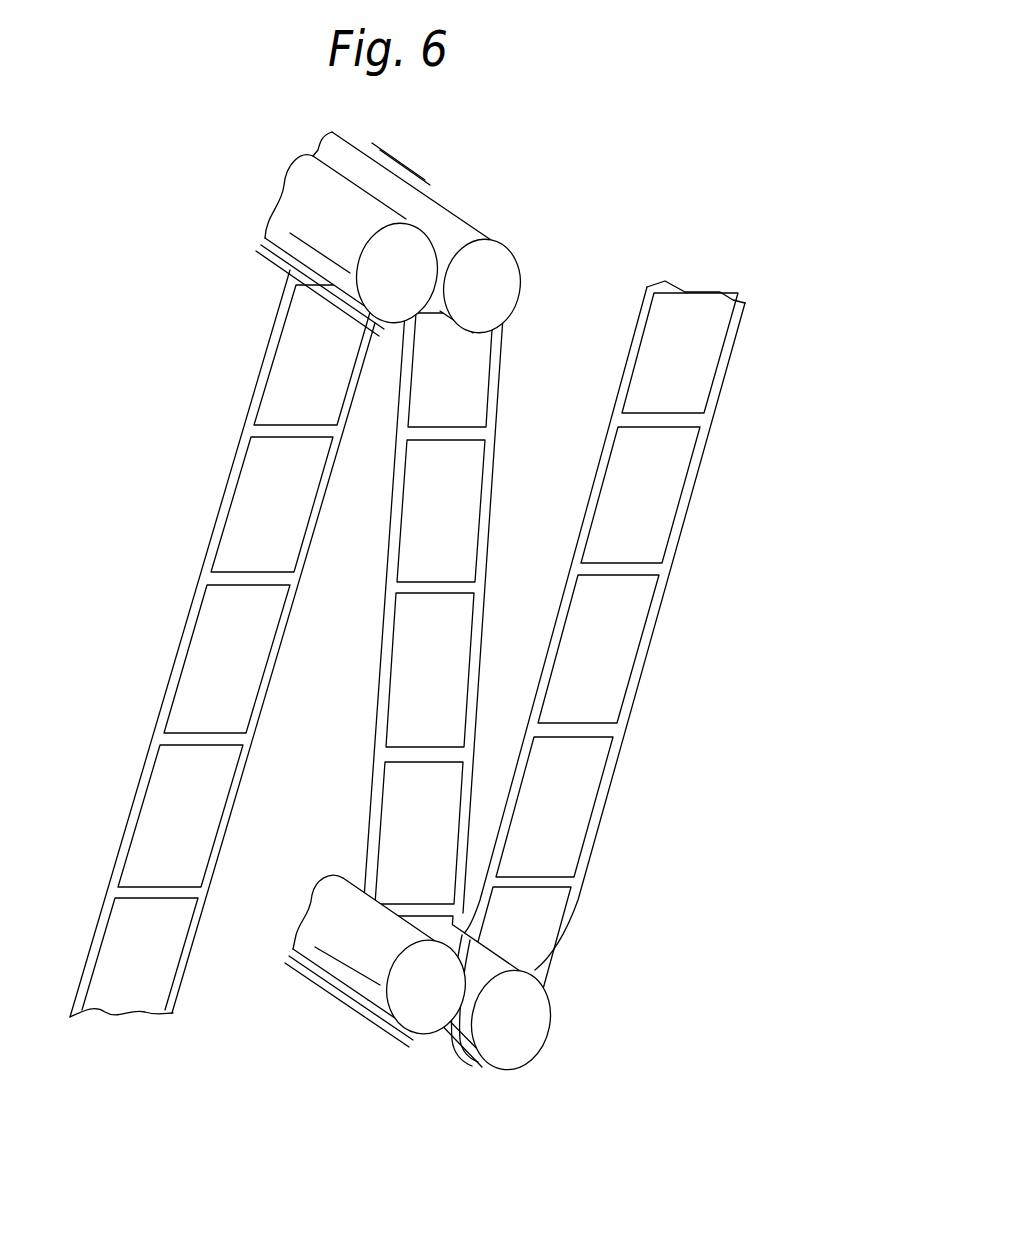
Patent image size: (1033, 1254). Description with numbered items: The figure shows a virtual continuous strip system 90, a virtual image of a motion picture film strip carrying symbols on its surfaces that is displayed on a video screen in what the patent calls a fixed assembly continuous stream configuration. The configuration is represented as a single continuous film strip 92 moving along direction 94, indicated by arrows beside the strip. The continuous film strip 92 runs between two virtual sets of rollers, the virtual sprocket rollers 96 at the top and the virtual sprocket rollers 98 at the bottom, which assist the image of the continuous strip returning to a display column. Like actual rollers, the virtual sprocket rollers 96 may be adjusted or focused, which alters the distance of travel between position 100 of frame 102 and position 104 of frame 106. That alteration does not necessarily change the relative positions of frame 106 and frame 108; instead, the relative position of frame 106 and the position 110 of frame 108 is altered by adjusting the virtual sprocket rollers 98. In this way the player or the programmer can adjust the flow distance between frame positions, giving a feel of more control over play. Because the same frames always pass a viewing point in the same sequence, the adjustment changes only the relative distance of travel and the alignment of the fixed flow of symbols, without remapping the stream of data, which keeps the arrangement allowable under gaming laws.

The virtual continuous strip system 90 is at (480, 606).
The continuous film strip 92 is at (617, 640).
The direction 94 is at (327, 523).
The virtual sprocket rollers 96 is at (297, 200).
The virtual sprocket rollers 98 is at (520, 1030).
The position 100 is at (224, 643).
The frame 102 is at (253, 680).
The position 104 is at (452, 656).
The frame 106 is at (458, 677).
The frame 108 is at (617, 702).
The position 110 is at (603, 640).